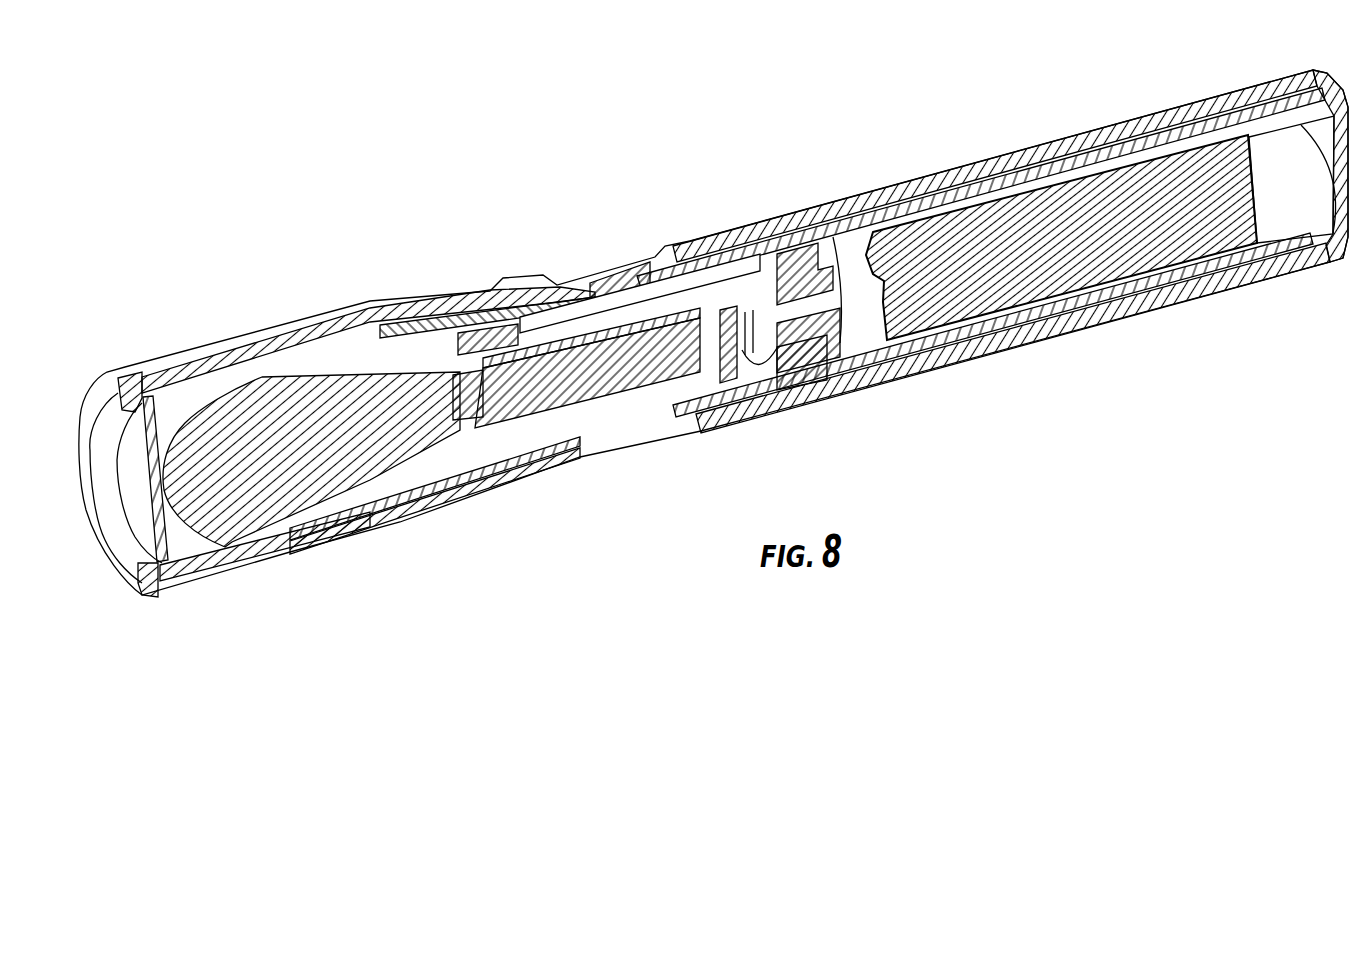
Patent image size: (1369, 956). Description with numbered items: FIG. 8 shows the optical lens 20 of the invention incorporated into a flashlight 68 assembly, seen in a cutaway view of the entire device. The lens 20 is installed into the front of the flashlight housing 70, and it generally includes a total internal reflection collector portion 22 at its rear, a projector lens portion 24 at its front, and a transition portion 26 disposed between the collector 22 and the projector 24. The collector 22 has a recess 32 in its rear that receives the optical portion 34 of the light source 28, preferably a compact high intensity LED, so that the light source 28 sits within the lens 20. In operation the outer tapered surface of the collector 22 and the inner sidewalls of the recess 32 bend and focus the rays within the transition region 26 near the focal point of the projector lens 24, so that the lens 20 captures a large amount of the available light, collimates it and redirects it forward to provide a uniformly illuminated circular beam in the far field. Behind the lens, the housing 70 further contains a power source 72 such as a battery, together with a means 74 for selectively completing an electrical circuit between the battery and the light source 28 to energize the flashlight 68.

The lens 20 is at (268, 505).
The total internal reflection collector portion 22 is at (407, 392).
The projector lens portion 24 is at (203, 430).
The transition portion 26 is at (300, 410).
The light source 28 is at (480, 385).
The recess 32 is at (447, 405).
The optical portion 34 is at (480, 472).
The flashlight 68 is at (674, 188).
The flashlight housing 70 is at (367, 533).
The power source 72 is at (947, 305).
The means for selectively completing an electrical circuit 74 is at (620, 292).